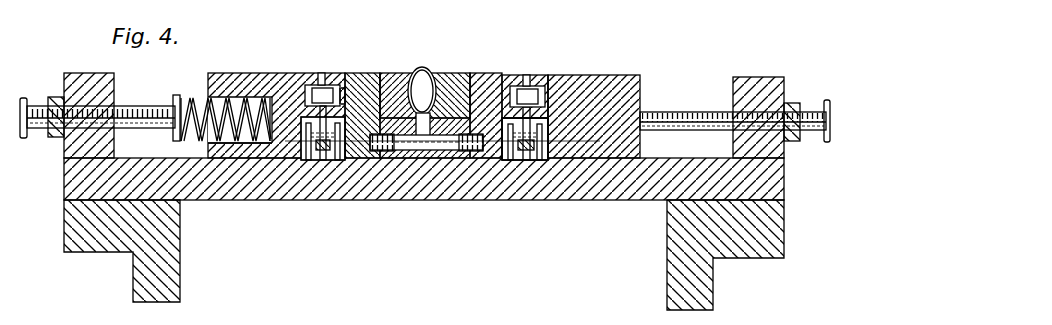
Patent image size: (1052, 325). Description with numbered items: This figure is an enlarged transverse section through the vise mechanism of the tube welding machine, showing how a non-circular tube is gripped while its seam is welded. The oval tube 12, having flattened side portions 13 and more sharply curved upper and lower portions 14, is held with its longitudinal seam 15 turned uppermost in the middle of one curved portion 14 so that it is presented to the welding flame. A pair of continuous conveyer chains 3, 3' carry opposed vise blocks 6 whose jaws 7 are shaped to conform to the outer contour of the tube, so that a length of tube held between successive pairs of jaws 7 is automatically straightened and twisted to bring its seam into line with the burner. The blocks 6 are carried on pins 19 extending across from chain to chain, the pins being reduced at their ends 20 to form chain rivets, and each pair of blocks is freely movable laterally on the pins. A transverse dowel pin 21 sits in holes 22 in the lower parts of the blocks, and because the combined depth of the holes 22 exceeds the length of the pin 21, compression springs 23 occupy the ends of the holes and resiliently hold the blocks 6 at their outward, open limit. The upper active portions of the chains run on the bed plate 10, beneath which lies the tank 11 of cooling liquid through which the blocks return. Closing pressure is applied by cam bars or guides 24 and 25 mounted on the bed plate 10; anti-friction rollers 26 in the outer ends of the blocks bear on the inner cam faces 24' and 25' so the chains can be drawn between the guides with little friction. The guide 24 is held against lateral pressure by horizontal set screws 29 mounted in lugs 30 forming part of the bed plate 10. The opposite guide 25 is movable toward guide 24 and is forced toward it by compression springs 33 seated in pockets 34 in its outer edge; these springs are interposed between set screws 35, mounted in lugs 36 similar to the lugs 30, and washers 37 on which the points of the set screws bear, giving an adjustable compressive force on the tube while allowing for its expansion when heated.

The conveyer chain 3 is at (306, 183).
The conveyer chain 3' is at (543, 176).
The vise block 6 is at (477, 134).
The jaw 7 is at (381, 80).
The bed plate 10 is at (641, 201).
The tank 11 is at (180, 283).
The tube 12 is at (434, 74).
The flattened side portion 13 is at (405, 82).
The sharply curved portion 14 is at (433, 130).
The longitudinal seam 15 is at (423, 67).
The pin 19 is at (512, 158).
The reduced end 20 is at (328, 150).
The dowel pin 21 is at (421, 150).
The hole 22 is at (385, 152).
The compression spring 23 is at (357, 108).
The cam bar 24 is at (571, 102).
The inner cam face 24' is at (572, 77).
The cam bar 25 is at (276, 100).
The inner cam face 25' is at (323, 68).
The anti-friction roller 26 is at (338, 73).
The set screw 29 is at (684, 112).
The lug 30 is at (753, 77).
The compression spring 33 is at (188, 97).
The pocket 34 is at (243, 143).
The set screw 35 is at (125, 110).
The lug 36 is at (93, 62).
The washer 37 is at (173, 136).